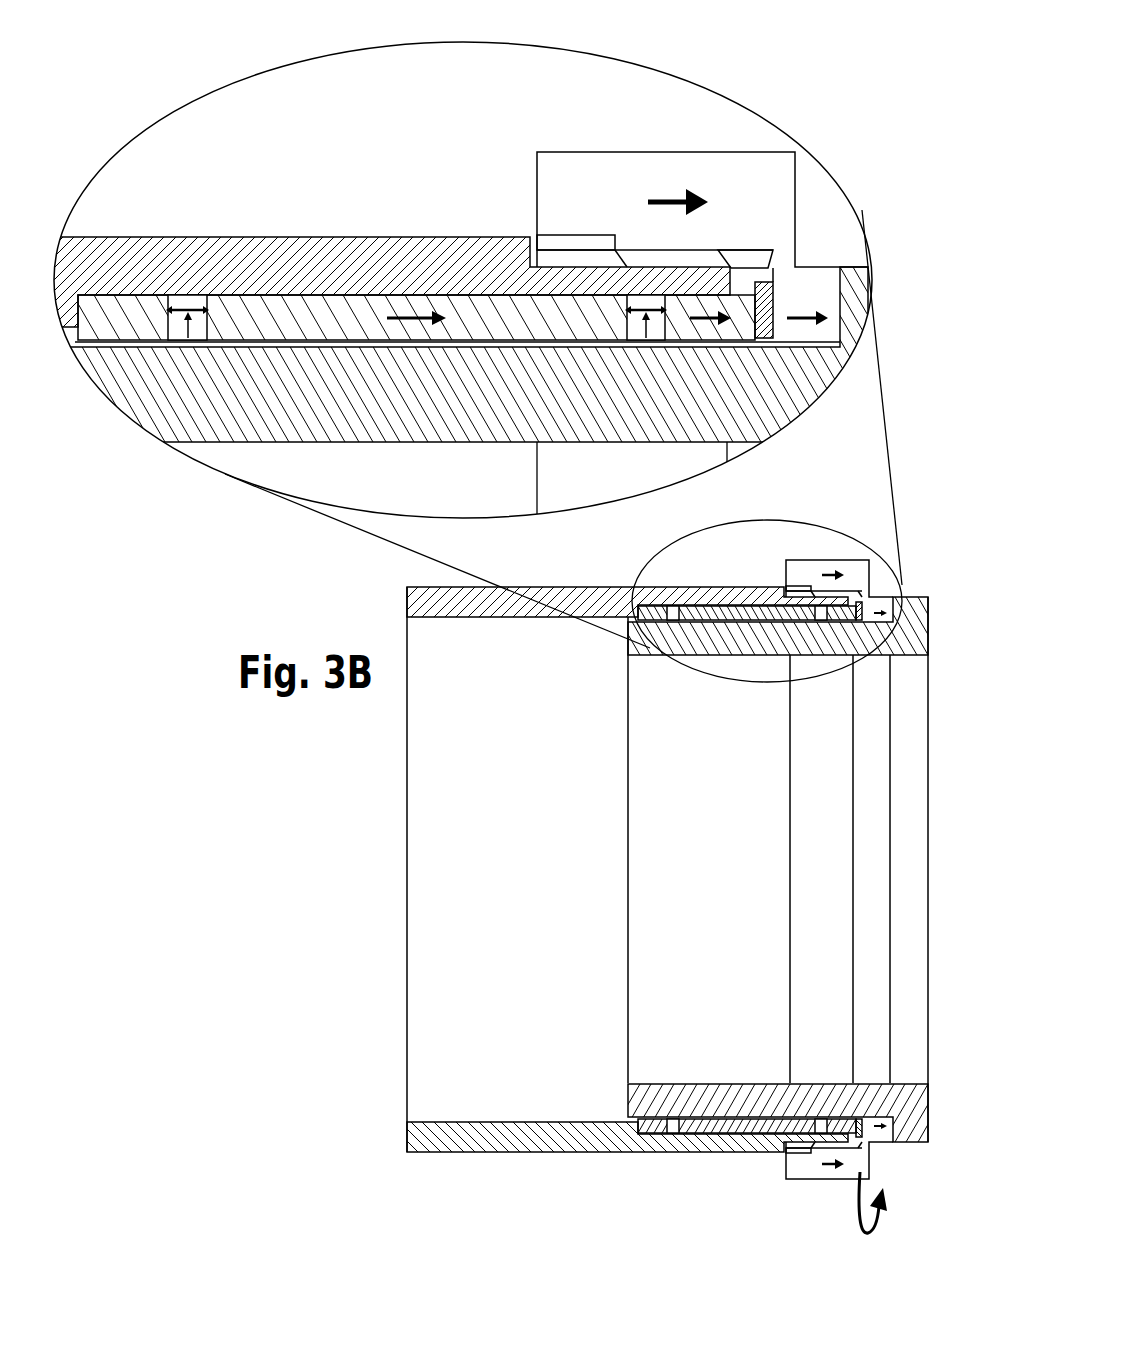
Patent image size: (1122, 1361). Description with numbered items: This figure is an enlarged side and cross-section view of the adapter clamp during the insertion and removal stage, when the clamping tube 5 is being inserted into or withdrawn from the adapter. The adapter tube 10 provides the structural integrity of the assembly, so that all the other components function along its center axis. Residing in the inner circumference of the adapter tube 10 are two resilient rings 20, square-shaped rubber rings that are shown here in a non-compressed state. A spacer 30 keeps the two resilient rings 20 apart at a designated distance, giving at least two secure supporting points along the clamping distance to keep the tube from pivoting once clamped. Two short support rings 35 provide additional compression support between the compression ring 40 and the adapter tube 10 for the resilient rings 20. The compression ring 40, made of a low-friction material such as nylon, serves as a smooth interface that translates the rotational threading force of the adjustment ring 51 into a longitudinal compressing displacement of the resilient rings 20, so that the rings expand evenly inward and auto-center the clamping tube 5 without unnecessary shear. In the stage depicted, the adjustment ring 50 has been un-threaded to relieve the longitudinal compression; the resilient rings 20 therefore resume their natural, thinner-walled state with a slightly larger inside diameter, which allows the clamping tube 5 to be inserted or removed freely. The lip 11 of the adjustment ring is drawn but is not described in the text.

The clamping tube 5 is at (510, 390).
The adapter tube 10 is at (107, 267).
The lip 11 is at (560, 260).
The resilient ring 20 is at (180, 298).
The spacer 30 is at (298, 317).
The support ring 35 is at (130, 312).
The compression ring 40 is at (775, 268).
The adjustment ring 50 is at (583, 193).
The adjustment ring 51 is at (750, 260).